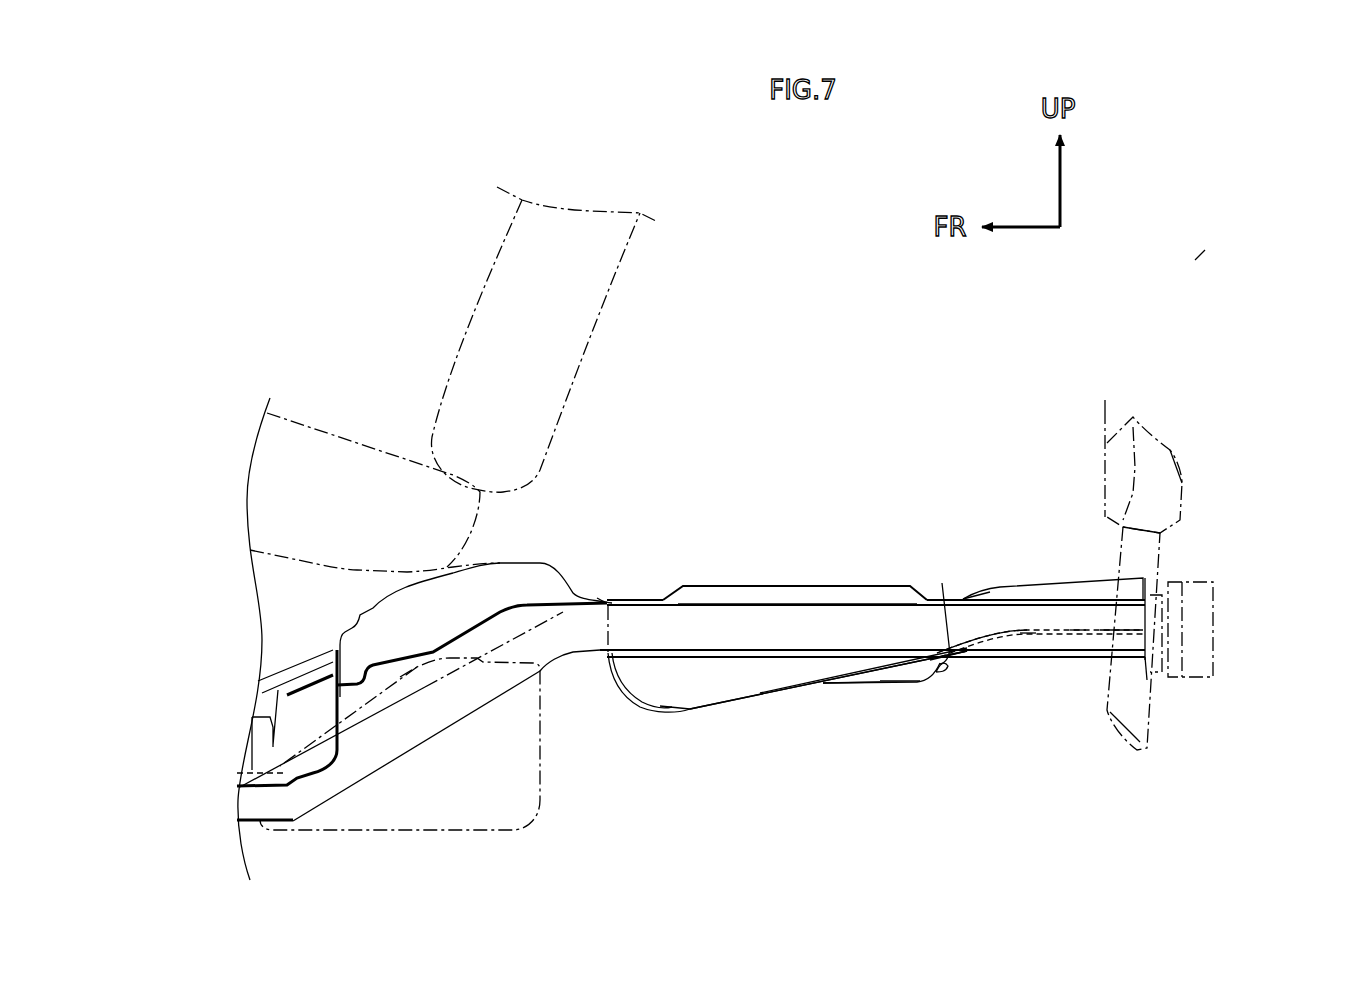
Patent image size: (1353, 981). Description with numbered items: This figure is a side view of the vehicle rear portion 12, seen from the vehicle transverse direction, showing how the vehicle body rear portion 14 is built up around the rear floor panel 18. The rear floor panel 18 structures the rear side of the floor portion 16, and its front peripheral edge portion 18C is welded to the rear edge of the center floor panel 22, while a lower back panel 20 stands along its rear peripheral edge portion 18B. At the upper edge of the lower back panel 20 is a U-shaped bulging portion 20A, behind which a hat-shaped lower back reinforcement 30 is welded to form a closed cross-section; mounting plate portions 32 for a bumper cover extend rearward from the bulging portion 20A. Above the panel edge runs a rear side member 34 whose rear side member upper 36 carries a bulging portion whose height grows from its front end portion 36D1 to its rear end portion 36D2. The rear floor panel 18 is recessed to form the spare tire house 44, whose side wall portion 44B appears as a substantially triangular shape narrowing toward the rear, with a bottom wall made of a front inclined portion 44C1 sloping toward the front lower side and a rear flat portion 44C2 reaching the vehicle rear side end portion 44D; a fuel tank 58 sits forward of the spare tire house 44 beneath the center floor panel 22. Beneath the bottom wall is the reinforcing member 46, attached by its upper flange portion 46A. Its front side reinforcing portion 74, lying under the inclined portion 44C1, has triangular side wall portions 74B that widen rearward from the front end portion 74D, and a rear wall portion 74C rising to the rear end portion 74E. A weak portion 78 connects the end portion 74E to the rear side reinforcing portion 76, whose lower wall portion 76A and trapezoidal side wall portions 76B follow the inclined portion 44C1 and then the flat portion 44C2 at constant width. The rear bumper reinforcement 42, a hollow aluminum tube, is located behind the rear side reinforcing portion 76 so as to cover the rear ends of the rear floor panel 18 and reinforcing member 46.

The vehicle rear portion 12 is at (1202, 253).
The vehicle body rear portion 14 is at (1063, 381).
The floor portion 16 is at (577, 549).
The rear floor panel 18 is at (714, 544).
The peripheral edge portion 18B is at (1147, 680).
The peripheral edge portion 18C is at (601, 598).
The lower back panel 20 is at (1172, 449).
The bulging portion 20A is at (1180, 523).
The center floor panel 22 is at (515, 563).
The lower back reinforcement 30 is at (1106, 410).
The mounting plate portion 32 is at (1180, 478).
The rear side member 34 is at (780, 596).
The rear side member upper 36 is at (1061, 582).
The end portion 36D1 is at (990, 597).
The end portion 36D2 is at (1133, 583).
The rear bumper reinforcement 42 is at (1213, 667).
The spare tire house 44 is at (736, 707).
The side wall portion 44B is at (767, 673).
The inclined portion 44C1 is at (690, 708).
The flat portion 44C2 is at (1027, 633).
The vehicle rear side end portion 44D is at (1213, 617).
The reinforcing member 46 is at (982, 750).
The flange portion 46A is at (867, 668).
The fuel tank 58 is at (510, 810).
The front side reinforcing portion 74 is at (903, 709).
The side wall portion 74B is at (913, 675).
The rear wall portion 74C is at (935, 667).
The end portion 74D is at (829, 683).
The end portion 74E is at (933, 660).
The rear side reinforcing portion 76 is at (1082, 666).
The lower wall portion 76A is at (1050, 667).
The side wall portion 76B is at (1078, 632).
The weak portion 78 is at (941, 609).